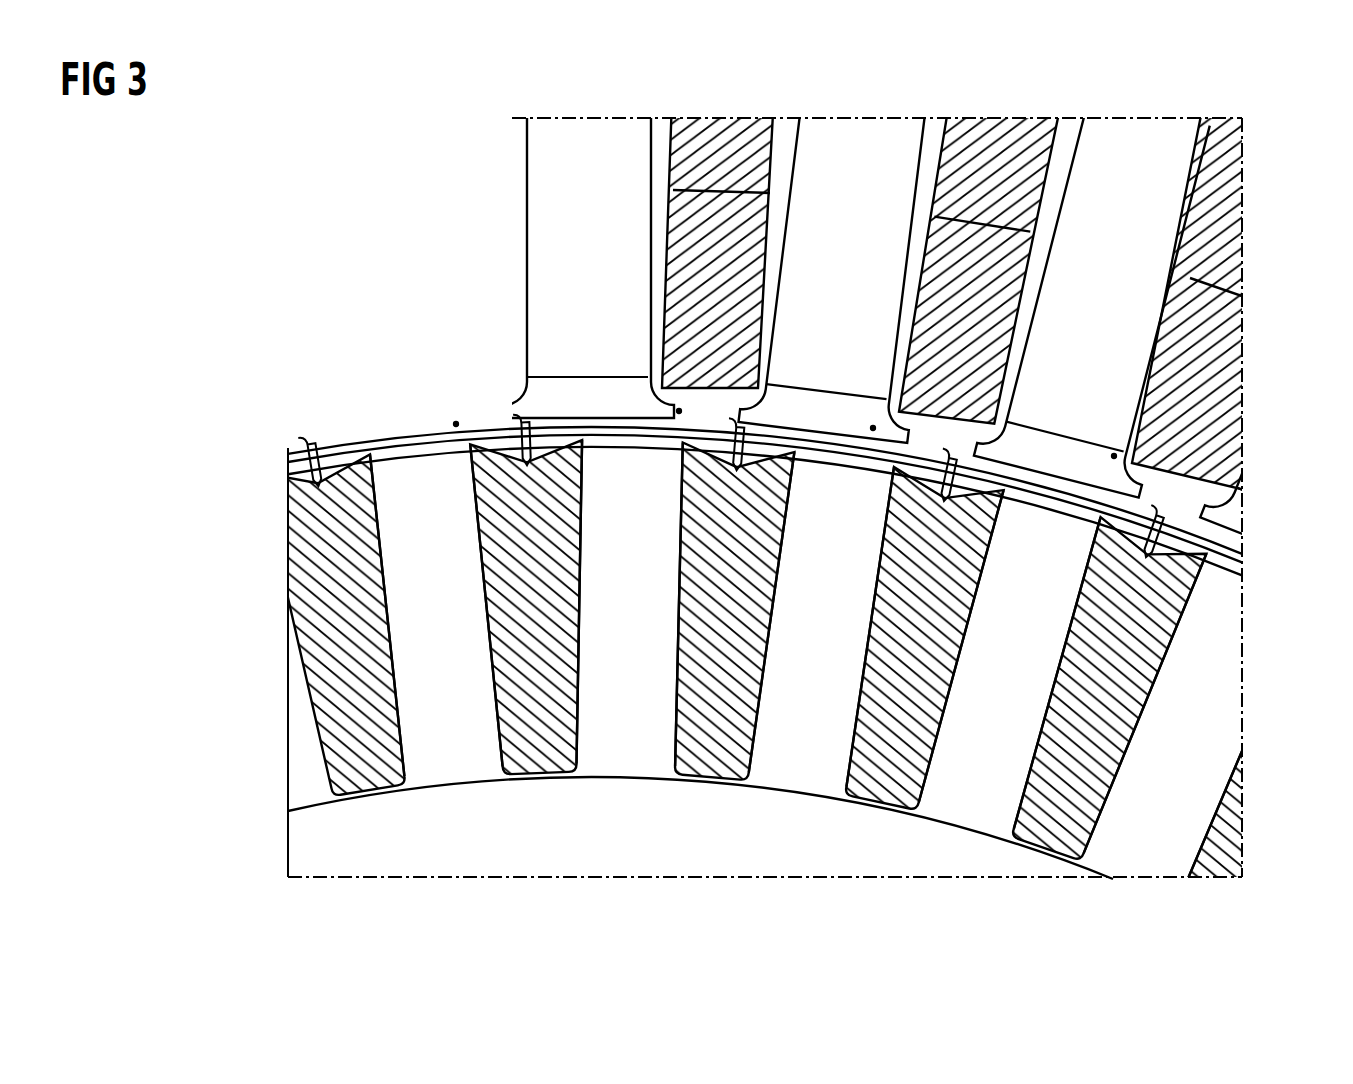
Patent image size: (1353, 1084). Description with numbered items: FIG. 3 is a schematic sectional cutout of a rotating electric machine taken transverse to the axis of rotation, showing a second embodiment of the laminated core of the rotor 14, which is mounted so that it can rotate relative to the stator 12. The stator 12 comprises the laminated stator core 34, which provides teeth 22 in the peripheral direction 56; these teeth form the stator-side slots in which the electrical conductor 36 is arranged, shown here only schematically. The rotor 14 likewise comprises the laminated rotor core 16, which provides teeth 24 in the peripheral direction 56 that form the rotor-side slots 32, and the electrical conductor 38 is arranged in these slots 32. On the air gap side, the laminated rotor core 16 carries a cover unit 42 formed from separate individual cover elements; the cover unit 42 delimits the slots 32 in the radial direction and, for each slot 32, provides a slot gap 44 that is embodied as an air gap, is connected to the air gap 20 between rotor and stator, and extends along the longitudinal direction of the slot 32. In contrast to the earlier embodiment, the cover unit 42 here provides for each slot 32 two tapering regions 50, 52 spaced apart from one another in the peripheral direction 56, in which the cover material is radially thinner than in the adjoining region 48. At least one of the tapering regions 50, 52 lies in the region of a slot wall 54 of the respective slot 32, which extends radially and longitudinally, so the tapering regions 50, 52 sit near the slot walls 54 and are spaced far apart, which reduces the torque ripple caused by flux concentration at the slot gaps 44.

The stator 12 is at (279, 148).
The rotor 14 is at (348, 887).
The laminated rotor core 16 is at (484, 864).
The air gap 20 is at (1247, 553).
The teeth 22 is at (558, 132).
The teeth 24 is at (468, 720).
The rotor-side slots 32 is at (378, 800).
The laminated stator core 34 is at (590, 189).
The electrical conductor 36 is at (722, 136).
The electrical conductor 38 is at (383, 610).
The cover unit 42 is at (413, 457).
The slot gap 44 is at (308, 440).
The region adjoining the tapering region 48 is at (308, 440).
The tapering region 50 is at (456, 423).
The tapering region 52 is at (347, 436).
The slot wall 54 is at (478, 533).
The peripheral direction 56 is at (284, 454).